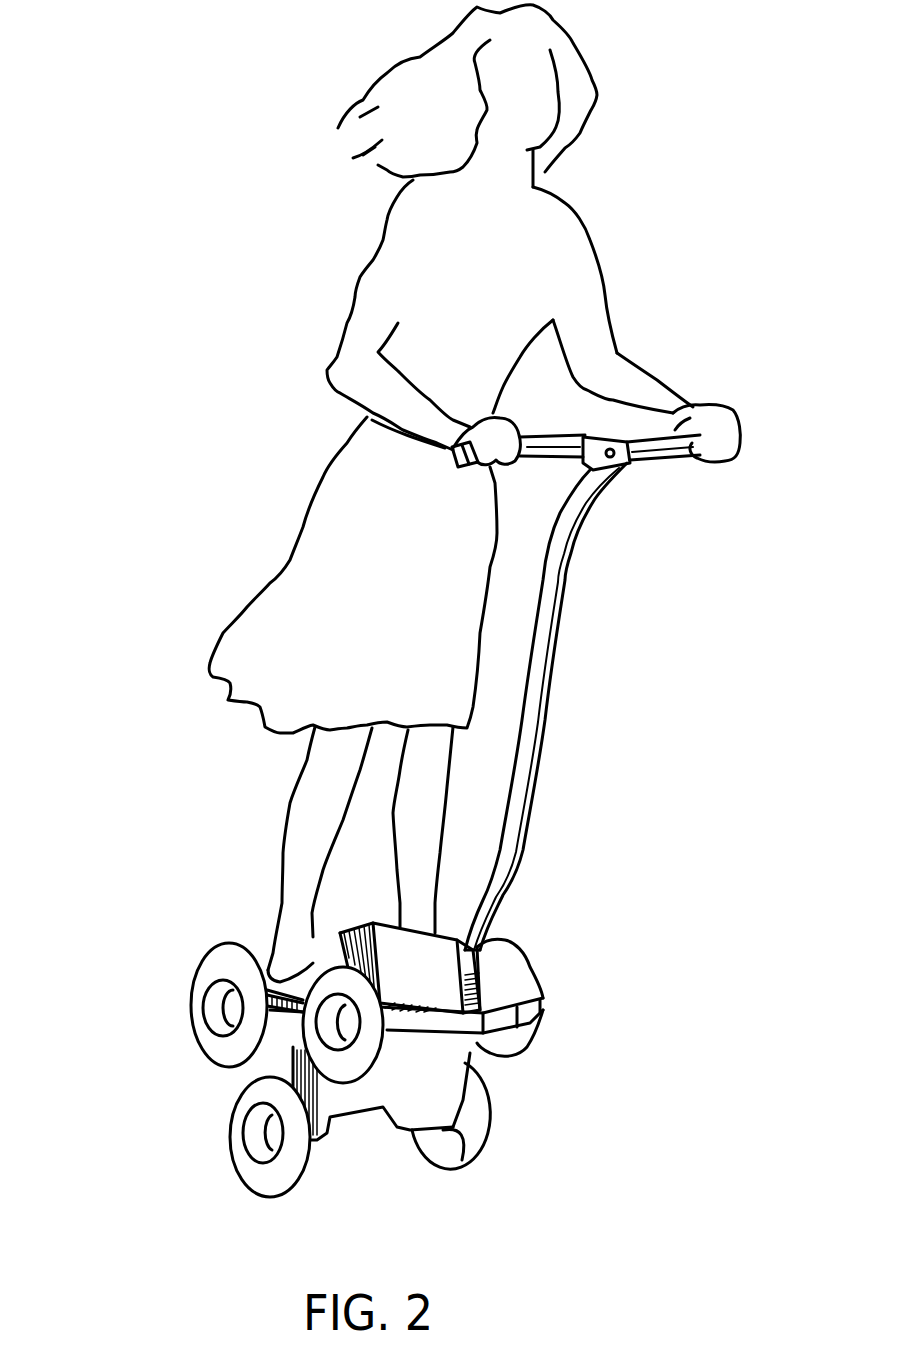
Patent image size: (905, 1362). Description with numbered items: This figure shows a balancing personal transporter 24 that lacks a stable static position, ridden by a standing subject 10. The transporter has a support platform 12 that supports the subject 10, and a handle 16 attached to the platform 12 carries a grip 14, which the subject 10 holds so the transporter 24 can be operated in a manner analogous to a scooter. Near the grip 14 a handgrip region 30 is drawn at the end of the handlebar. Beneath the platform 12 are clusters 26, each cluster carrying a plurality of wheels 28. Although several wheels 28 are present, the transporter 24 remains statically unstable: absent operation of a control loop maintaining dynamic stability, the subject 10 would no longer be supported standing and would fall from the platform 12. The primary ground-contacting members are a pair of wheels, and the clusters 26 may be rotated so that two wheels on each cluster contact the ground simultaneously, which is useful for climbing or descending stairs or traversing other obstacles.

The subject 10 is at (568, 212).
The personal transporter 24 is at (188, 516).
The grip 14 is at (635, 505).
The handgrip 30 is at (693, 462).
The handle 16 is at (553, 670).
The support platform 12 is at (548, 1023).
The clusters 26 is at (353, 1051).
The wheels 28 is at (200, 958).